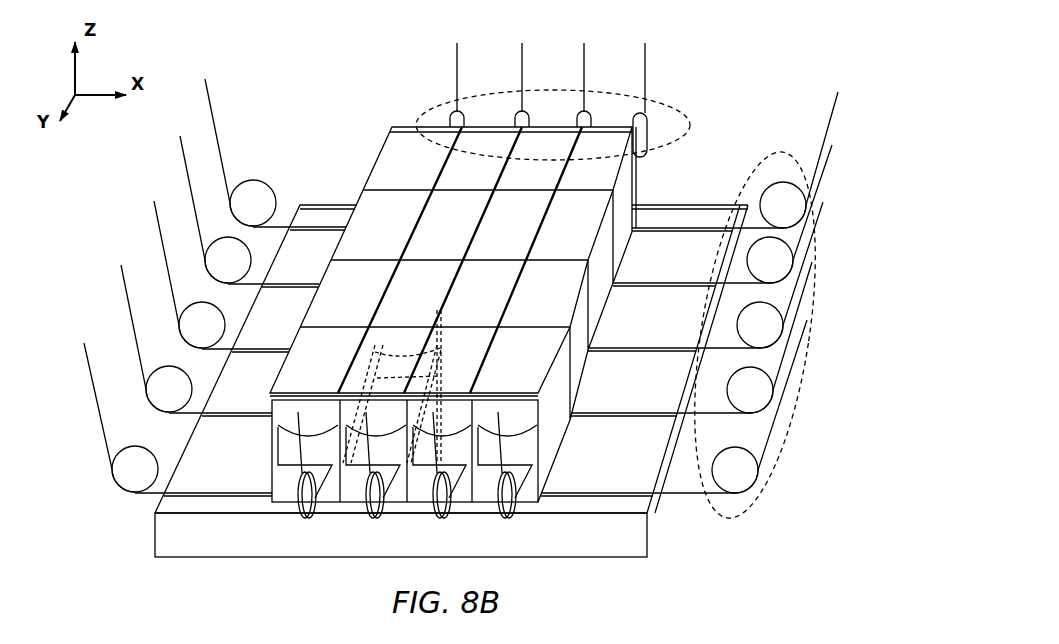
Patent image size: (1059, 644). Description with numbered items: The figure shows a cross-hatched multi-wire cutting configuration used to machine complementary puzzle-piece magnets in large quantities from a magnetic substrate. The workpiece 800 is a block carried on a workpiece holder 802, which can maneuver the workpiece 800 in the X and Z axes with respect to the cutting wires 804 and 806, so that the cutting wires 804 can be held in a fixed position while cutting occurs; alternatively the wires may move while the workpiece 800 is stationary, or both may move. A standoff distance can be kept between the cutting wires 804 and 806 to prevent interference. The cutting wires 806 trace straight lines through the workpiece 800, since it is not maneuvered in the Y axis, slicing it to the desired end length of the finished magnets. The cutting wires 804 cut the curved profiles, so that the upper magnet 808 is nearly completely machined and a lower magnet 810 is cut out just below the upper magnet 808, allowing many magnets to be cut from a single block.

The workpiece 800 is at (380, 150).
The workpiece holder 802 is at (625, 546).
The cutting wires 804 is at (438, 100).
The cutting wires 806 is at (783, 153).
The upper magnet 808 is at (380, 362).
The lower magnet 810 is at (378, 388).